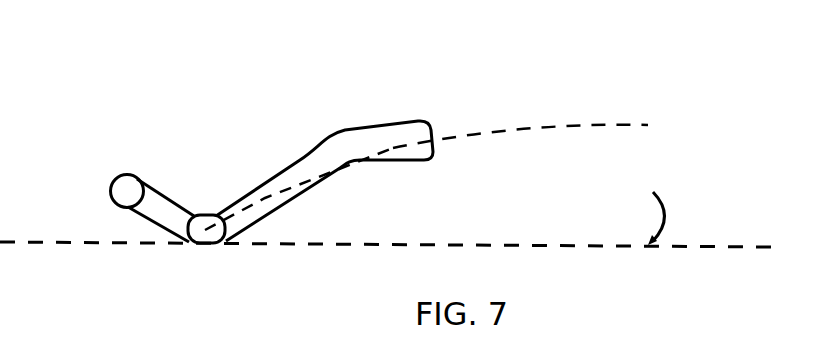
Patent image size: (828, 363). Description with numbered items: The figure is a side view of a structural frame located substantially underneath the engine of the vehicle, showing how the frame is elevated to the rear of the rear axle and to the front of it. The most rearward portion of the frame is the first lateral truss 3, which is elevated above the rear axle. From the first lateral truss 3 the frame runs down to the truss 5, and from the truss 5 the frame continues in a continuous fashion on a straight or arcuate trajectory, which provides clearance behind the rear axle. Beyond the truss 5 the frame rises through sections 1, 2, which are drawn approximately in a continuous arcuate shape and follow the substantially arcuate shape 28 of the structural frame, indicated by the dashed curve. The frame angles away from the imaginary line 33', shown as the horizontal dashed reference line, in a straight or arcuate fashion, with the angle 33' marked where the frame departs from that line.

The section 1 is at (393, 142).
The section 2 is at (279, 196).
The first lateral truss 3 is at (130, 182).
The truss 5 is at (217, 245).
The arcuate shape 28 is at (595, 127).
The imaginary line 33' is at (647, 207).